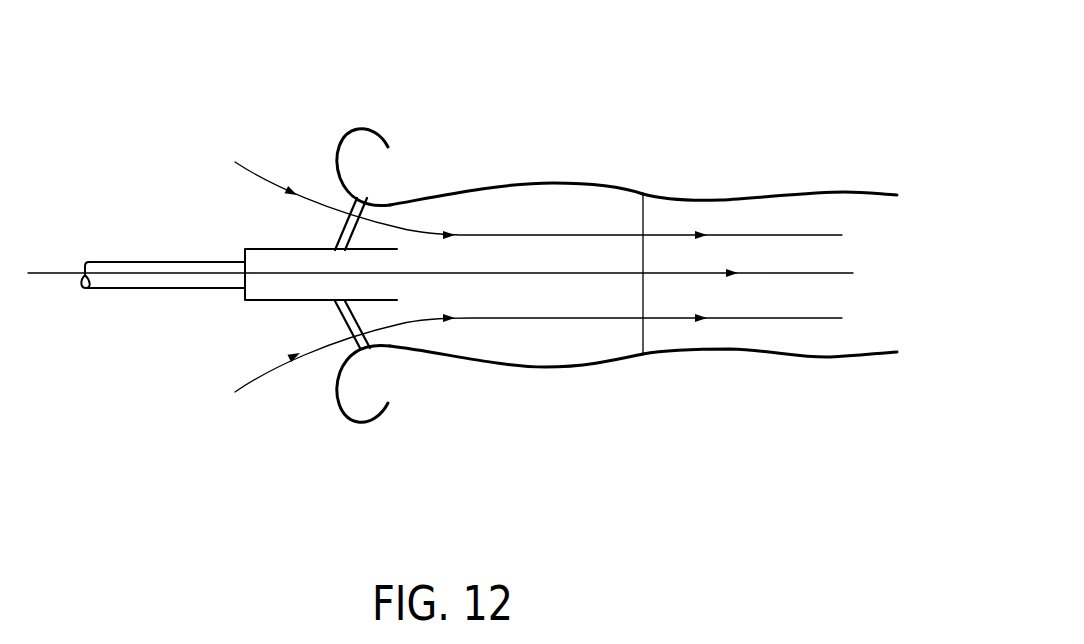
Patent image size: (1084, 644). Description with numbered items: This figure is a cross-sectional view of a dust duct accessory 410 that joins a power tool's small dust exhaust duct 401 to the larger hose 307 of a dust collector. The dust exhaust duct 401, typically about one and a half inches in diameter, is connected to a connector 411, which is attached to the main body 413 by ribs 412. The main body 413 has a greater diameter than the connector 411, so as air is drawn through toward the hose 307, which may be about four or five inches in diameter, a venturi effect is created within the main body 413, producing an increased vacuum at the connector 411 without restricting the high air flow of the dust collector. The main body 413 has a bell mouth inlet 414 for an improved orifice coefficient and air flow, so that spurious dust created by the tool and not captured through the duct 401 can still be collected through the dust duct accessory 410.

The hose 307 is at (704, 213).
The dust exhaust duct 401 is at (167, 281).
The dust duct accessory 410 is at (428, 126).
The connector 411 is at (280, 292).
The ribs 412 is at (385, 335).
The main body 413 is at (555, 351).
The bell mouth inlet 414 is at (357, 423).